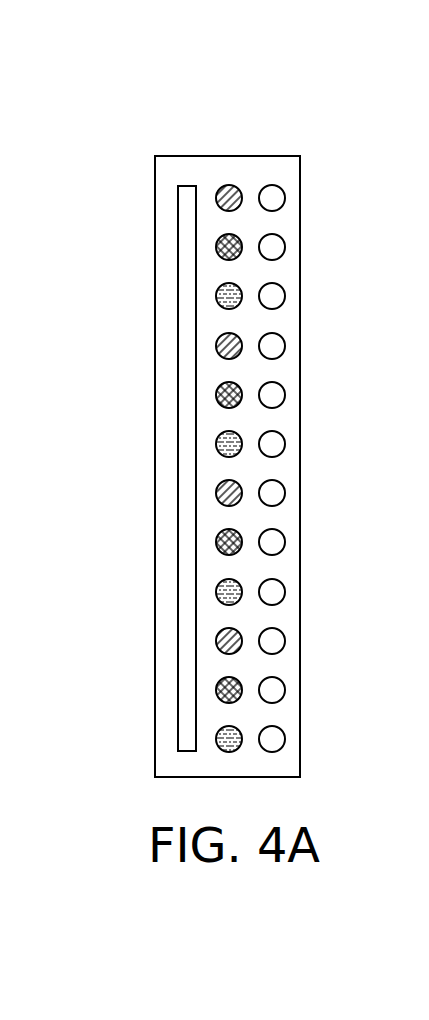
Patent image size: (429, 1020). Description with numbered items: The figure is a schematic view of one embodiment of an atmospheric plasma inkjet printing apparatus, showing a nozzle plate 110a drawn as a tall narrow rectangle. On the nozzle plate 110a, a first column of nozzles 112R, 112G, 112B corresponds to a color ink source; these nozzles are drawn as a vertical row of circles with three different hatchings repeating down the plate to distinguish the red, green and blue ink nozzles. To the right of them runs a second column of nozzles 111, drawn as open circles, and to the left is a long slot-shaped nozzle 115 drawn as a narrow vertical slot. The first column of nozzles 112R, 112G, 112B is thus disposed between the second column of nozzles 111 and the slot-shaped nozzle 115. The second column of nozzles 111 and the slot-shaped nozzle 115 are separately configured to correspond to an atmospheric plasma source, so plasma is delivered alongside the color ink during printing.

The nozzle plate 110a is at (131, 139).
The second column of nozzles 111 is at (279, 198).
The nozzle of the first column 112R is at (216, 640).
The nozzle of the first column 112G is at (216, 689).
The nozzle of the first column 112B is at (216, 738).
The slot-shaped nozzle 115 is at (190, 468).